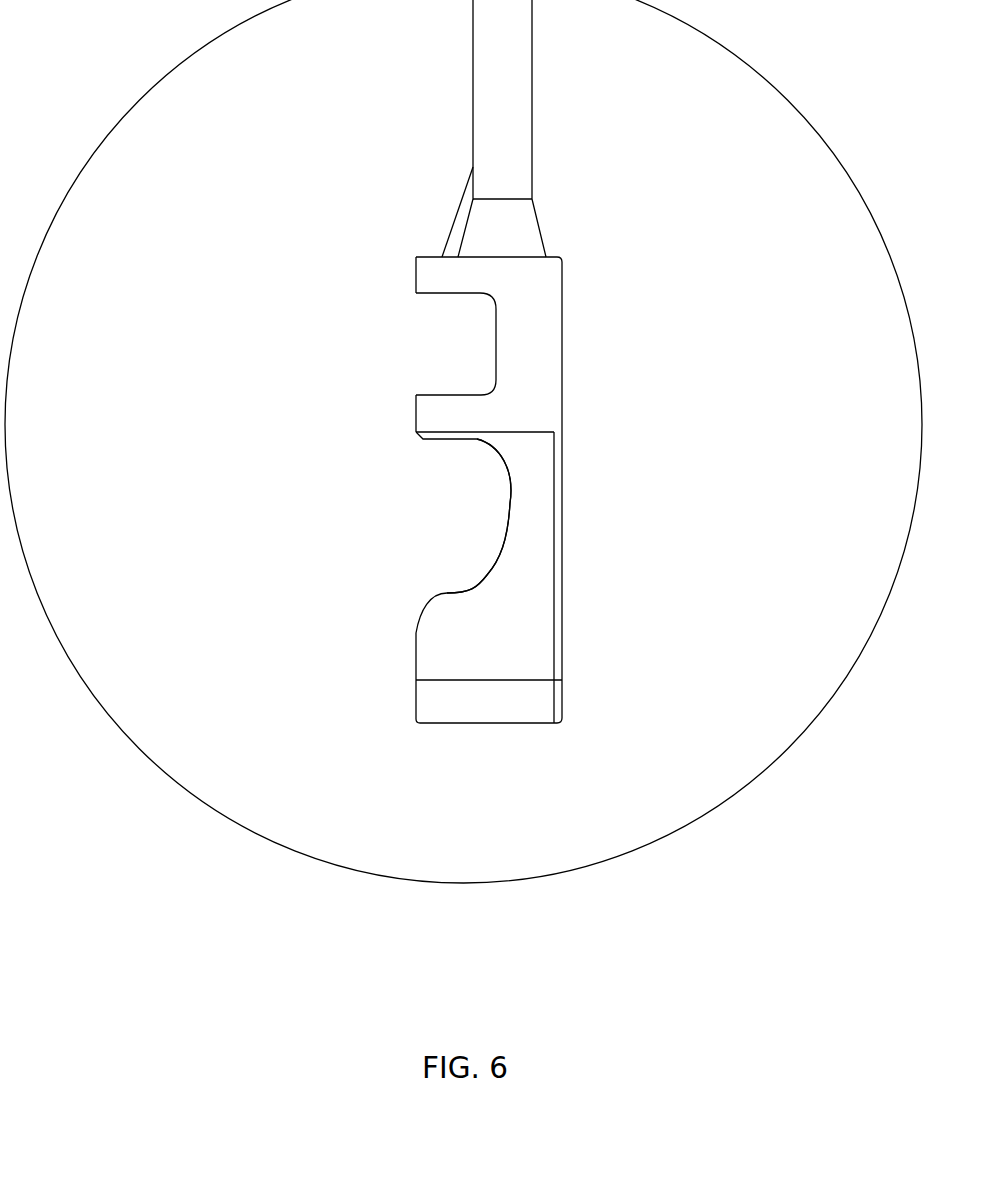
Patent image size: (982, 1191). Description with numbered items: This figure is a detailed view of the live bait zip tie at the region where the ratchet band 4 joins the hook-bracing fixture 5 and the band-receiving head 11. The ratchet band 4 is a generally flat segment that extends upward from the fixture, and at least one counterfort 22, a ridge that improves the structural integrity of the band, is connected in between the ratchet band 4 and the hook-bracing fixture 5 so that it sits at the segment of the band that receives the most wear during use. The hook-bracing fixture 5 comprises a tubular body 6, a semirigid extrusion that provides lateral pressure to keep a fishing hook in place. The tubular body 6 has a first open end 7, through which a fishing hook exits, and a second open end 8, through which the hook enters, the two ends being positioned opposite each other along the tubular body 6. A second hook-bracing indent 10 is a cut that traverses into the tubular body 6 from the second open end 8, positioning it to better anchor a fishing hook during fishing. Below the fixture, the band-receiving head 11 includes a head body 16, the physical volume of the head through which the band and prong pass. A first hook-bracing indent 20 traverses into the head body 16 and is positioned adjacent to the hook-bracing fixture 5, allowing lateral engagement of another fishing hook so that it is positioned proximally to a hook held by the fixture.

The ratchet band 4 is at (491, 90).
The counterfort 22 is at (457, 230).
The tubular body 6 is at (516, 363).
The second hook-bracing indent 10 is at (496, 368).
The first open end 7 is at (557, 333).
The head body 16 is at (489, 644).
The first hook-bracing indent 20 is at (497, 567).
The second open end 8 is at (382, 302).
The hook-bracing fixture 5 is at (332, 347).
The band-receiving head 11 is at (365, 567).